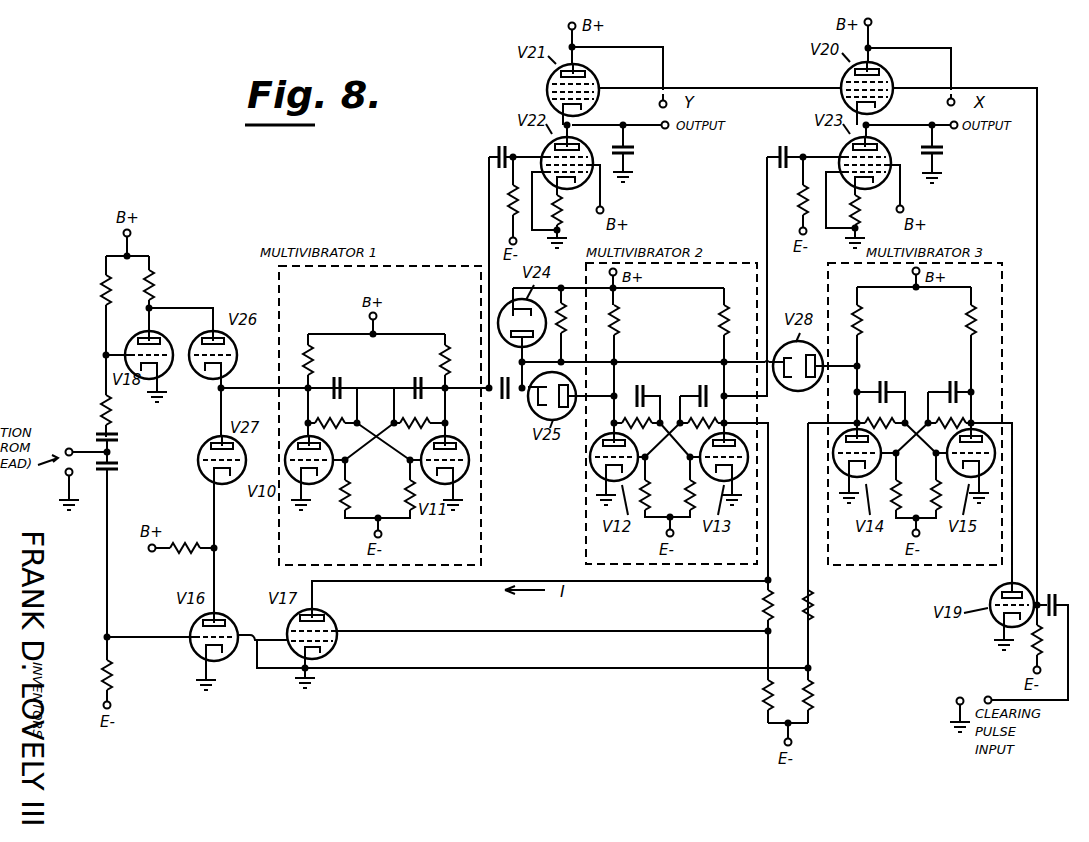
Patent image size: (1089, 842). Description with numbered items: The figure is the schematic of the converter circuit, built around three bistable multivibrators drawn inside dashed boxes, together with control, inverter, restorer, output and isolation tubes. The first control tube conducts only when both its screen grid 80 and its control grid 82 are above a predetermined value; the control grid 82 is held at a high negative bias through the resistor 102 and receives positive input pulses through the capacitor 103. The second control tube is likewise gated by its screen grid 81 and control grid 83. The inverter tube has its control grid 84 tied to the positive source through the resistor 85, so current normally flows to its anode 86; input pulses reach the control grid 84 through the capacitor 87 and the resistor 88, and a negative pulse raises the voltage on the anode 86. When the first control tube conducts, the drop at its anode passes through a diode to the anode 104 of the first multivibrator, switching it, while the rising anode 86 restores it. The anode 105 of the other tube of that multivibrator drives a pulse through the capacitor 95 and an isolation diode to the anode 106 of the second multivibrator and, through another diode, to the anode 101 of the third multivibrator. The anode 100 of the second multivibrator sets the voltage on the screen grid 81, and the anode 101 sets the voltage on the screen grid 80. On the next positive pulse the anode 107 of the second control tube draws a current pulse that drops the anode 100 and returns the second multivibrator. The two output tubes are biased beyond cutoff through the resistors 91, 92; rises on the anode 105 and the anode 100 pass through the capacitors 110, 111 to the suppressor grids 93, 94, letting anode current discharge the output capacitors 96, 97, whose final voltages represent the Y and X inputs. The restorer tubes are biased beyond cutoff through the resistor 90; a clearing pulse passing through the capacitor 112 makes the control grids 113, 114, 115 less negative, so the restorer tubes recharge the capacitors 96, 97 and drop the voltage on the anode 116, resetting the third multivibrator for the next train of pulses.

The screen grid 80 is at (193, 628).
The screen grid 81 is at (334, 622).
The control grid 82 is at (195, 650).
The control grid 83 is at (334, 642).
The control grid 84 is at (163, 345).
The resistor 85 is at (100, 290).
The anode 86 is at (142, 340).
The capacitor 87 is at (120, 441).
The resistor 88 is at (100, 408).
The resistor 90 is at (1030, 655).
The resistor 91 is at (506, 198).
The resistor 92 is at (800, 198).
The suppressor grid 93 is at (586, 150).
The suppressor grid 94 is at (842, 150).
The capacitor 95 is at (505, 400).
The output capacitor 96 is at (635, 153).
The output capacitor 97 is at (942, 153).
The anode 100 is at (752, 427).
The anode 101 is at (857, 428).
The resistor 102 is at (114, 680).
The capacitor 103 is at (120, 468).
The anode 104 is at (326, 425).
The anode 105 is at (448, 437).
The anode 106 is at (590, 461).
The anode 107 is at (318, 606).
The capacitor 110 is at (495, 153).
The capacitor 111 is at (780, 143).
The capacitor 112 is at (1050, 590).
The control grid 113 is at (990, 595).
The control grid 114 is at (882, 80).
The control grid 115 is at (547, 89).
The anode 116 is at (980, 422).